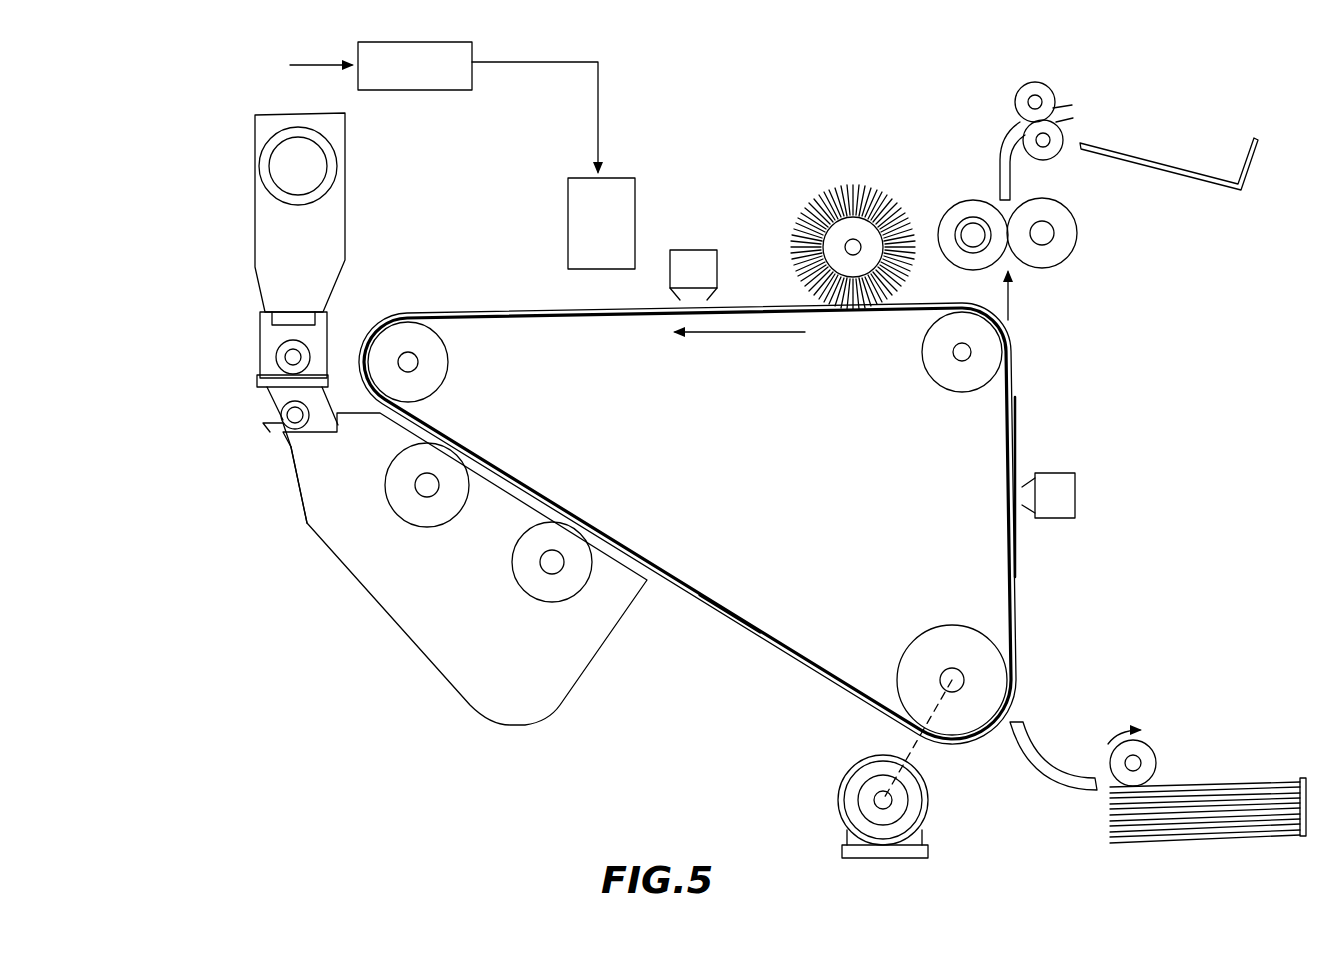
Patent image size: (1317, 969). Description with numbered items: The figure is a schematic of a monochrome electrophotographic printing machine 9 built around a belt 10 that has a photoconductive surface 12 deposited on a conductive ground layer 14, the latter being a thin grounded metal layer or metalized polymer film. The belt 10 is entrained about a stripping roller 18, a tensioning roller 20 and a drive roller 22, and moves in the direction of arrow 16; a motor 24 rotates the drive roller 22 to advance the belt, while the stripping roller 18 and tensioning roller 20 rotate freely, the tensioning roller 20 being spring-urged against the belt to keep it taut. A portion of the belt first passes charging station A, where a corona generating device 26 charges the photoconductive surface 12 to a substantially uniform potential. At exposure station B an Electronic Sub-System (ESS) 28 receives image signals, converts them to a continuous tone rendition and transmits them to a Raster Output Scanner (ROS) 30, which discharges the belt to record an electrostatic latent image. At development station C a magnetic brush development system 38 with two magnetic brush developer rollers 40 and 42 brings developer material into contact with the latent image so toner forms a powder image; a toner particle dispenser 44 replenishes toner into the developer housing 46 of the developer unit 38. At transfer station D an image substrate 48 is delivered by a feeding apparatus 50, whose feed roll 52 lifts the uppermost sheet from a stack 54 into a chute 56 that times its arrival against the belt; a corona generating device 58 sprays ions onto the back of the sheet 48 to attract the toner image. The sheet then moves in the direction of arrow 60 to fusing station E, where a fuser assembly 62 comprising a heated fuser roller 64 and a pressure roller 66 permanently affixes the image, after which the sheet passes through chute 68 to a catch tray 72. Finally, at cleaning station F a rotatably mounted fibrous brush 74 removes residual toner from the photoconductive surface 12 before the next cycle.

The electrophotographic printing machine 9 is at (748, 118).
The belt 10 is at (449, 311).
The photoconductive surface 12 is at (740, 627).
The conductive ground layer 14 is at (762, 625).
The arrow 16 is at (752, 333).
The stripping roller 18 is at (950, 380).
The tensioning roller 20 is at (448, 362).
The drive roller 22 is at (942, 628).
The motor 24 is at (795, 792).
The corona generating device 26 is at (700, 255).
The Electronic Sub-System (ESS) 28 is at (443, 103).
The Raster Output Scanner (ROS) 30 is at (642, 172).
The magnetic brush development system 38 is at (345, 625).
The magnetic brush developer roller 40 is at (447, 468).
The magnetic brush developer roller 42 is at (576, 535).
The toner particle dispenser 44 is at (237, 213).
The developer housing 46 is at (293, 510).
The image substrate 48 is at (1017, 545).
The feeding apparatus 50 is at (1237, 760).
The feed roll 52 is at (1150, 752).
The stack 54 is at (1205, 823).
The chute 56 is at (1045, 762).
The corona generating device 58 is at (1070, 490).
The arrow 60 is at (1010, 297).
The fuser assembly 62 is at (1078, 262).
The heated fuser roller 64 is at (960, 218).
The pressure roller 66 is at (1067, 228).
The chute 68 is at (1010, 133).
The catch tray 72 is at (1170, 165).
The fibrous brush 74 is at (866, 210).
The charging station A is at (735, 255).
The exposure station B is at (545, 258).
The development station C is at (382, 665).
The transfer station D is at (1077, 445).
The fusing station E is at (962, 130).
The cleaning station F is at (910, 175).